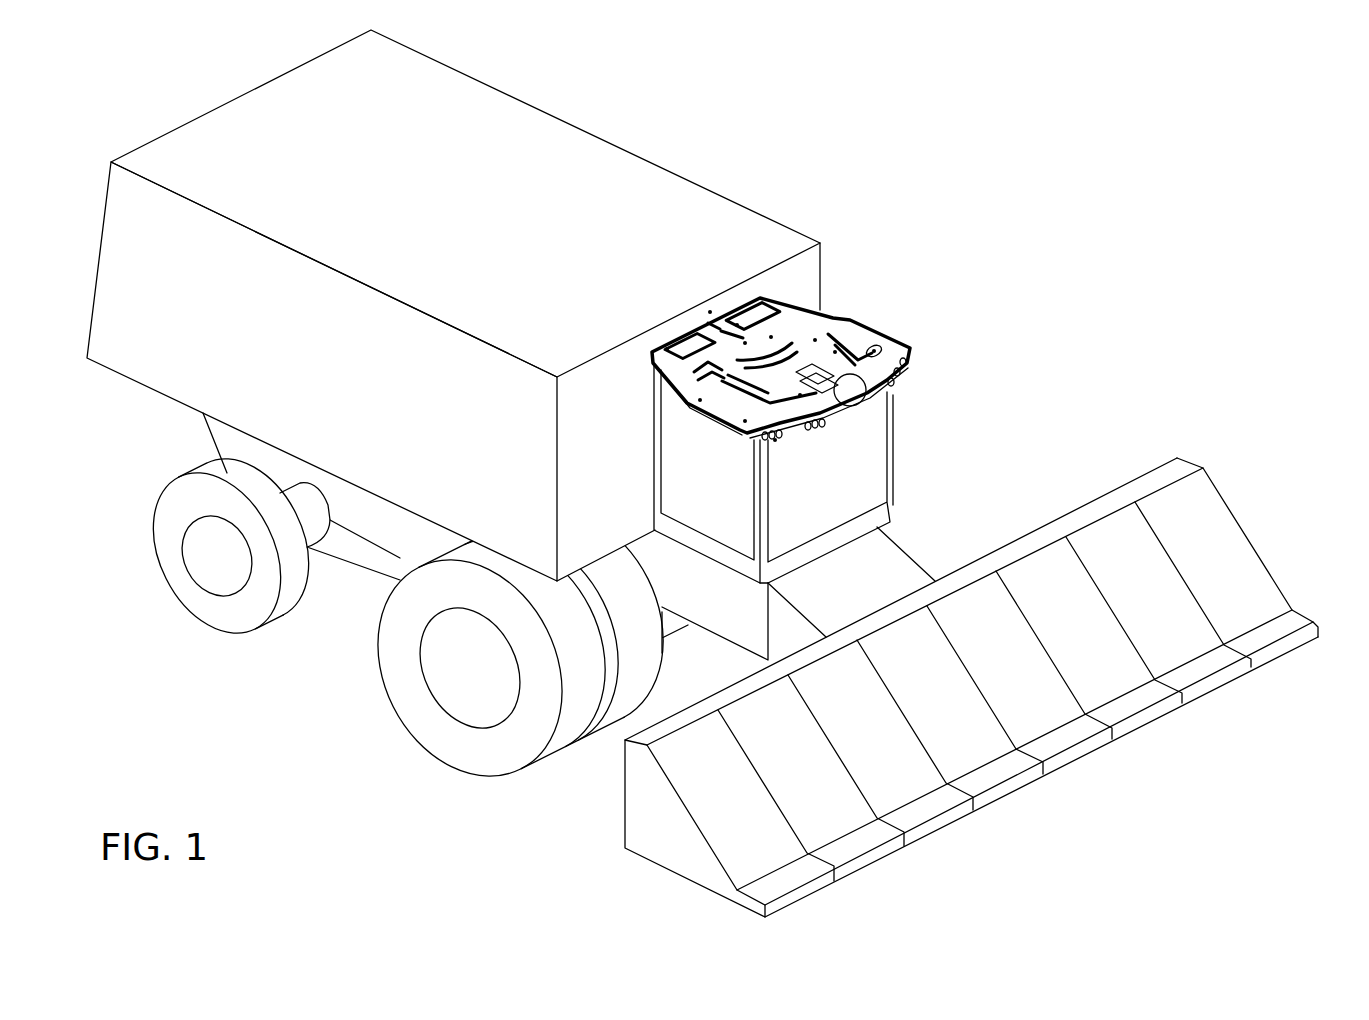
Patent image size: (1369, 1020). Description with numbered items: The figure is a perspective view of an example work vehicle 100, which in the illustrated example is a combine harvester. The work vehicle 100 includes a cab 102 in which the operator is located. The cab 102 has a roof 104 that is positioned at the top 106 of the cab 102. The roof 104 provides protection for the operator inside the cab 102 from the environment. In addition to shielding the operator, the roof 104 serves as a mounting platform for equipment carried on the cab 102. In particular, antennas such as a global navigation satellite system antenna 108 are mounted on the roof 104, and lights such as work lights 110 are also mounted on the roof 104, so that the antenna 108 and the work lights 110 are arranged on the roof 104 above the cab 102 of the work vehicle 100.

The work vehicle 100 is at (904, 102).
The cab 102 is at (793, 520).
The roof 104 is at (840, 318).
The top of the cab 106 is at (781, 370).
The global navigation satellite system (GNSS) antenna 108 is at (855, 392).
The work lights 110 is at (808, 427).